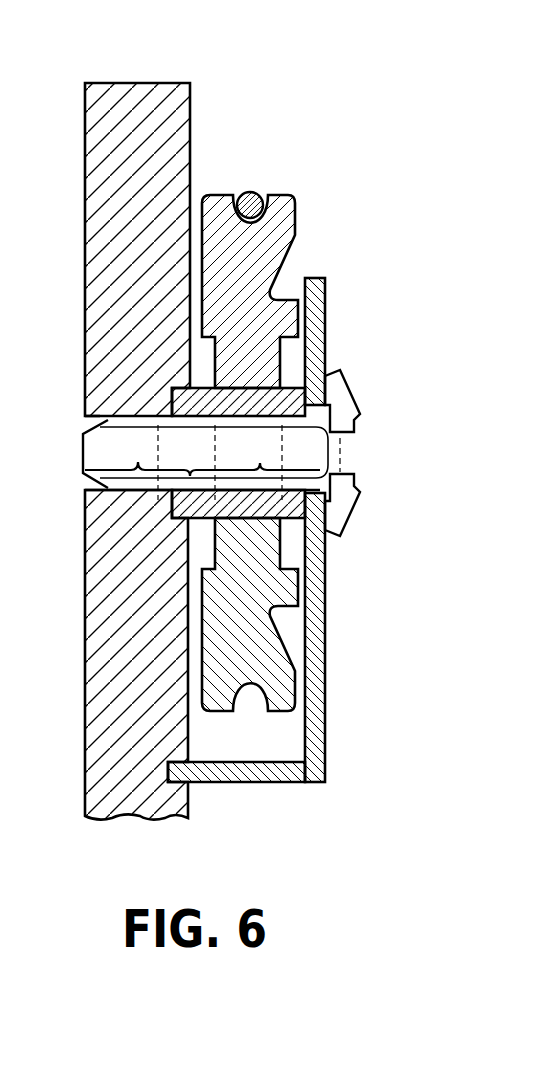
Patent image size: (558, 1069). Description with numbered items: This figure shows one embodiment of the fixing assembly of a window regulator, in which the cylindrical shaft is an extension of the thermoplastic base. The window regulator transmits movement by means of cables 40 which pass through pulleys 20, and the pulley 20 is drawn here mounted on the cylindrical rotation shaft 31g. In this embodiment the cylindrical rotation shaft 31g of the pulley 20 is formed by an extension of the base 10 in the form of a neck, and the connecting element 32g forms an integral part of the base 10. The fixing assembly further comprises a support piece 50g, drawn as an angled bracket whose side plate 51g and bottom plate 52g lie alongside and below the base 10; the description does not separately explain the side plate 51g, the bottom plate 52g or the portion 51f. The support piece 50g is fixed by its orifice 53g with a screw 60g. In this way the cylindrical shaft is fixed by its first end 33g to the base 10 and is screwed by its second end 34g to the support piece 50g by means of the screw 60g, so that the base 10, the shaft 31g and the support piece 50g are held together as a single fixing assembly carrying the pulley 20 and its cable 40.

The base 10 is at (152, 112).
The pulley 20 is at (293, 245).
The cable 40 is at (252, 192).
The support piece 50g is at (252, 533).
The bracket side plate 51g is at (312, 658).
The bracket bottom plate 52g is at (180, 773).
The first end of the cylindrical shaft 33g is at (172, 405).
The orifice of the support piece 53g is at (337, 413).
The screw 60g is at (130, 437).
The connecting element 32g is at (138, 468).
The cylindrical rotation shaft 31g is at (259, 466).
The second end of the cylindrical shaft 34g is at (341, 448).
The lower bracket side plate 51f is at (19, 503).